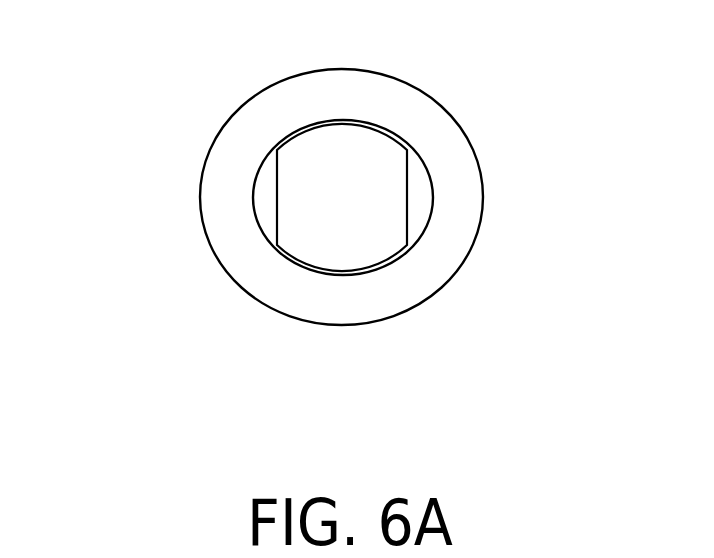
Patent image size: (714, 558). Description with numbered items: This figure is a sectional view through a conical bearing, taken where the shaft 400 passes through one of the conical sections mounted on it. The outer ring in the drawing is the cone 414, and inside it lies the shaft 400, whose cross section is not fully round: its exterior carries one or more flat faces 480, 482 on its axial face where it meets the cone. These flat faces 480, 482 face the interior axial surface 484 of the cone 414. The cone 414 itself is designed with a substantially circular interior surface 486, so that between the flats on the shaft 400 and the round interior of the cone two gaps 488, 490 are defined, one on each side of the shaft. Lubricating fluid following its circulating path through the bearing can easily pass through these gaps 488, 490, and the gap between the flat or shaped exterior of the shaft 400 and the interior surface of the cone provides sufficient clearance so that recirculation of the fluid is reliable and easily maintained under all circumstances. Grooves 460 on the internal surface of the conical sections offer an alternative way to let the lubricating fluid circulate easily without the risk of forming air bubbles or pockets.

The grooves 460 is at (341, 173).
The conical section 414 is at (395, 293).
The shaft 400 is at (342, 197).
The circular interior surface 486 is at (260, 165).
The gap 488 is at (263, 183).
The flat face 480 is at (277, 197).
The flat face 482 is at (410, 175).
The gap 490 is at (420, 202).
The interior axial surface 484 is at (427, 232).